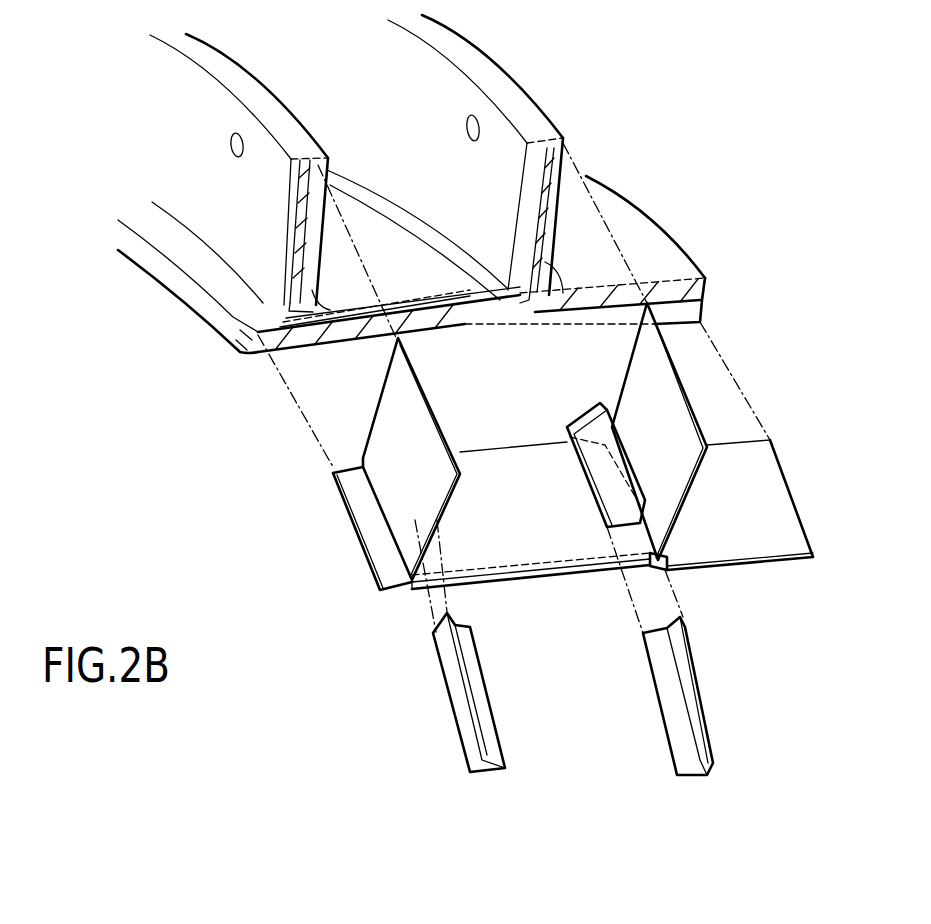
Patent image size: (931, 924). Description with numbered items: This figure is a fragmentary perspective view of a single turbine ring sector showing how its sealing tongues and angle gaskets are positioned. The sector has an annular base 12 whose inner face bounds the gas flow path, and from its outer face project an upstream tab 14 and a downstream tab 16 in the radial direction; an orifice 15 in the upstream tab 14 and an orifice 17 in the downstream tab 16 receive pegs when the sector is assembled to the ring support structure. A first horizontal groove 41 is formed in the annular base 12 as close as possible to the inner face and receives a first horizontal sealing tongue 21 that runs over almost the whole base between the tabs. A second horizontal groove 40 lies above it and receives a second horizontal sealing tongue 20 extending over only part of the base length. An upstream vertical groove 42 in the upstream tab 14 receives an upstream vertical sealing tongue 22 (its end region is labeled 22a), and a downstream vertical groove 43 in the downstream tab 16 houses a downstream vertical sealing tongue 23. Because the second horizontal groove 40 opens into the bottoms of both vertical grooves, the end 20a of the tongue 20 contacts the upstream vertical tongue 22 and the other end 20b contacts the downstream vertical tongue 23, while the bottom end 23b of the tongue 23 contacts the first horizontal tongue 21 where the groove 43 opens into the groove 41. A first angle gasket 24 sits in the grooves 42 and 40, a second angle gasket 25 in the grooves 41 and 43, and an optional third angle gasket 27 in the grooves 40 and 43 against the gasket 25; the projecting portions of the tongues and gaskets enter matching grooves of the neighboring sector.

The annular base 12 is at (470, 337).
The upstream tab 14 is at (322, 129).
The orifice 15 is at (230, 152).
The downstream tab 16 is at (548, 105).
The orifice 17 is at (467, 136).
The second horizontal sealing tongue 20 is at (516, 458).
The end of the second horizontal sealing tongue 20a is at (413, 585).
The other end of the second horizontal sealing tongue 20b is at (650, 578).
The first horizontal sealing tongue 21 is at (778, 505).
The upstream vertical sealing tongue 22 is at (395, 422).
The flange of first side plate 22a is at (383, 563).
The downstream vertical sealing tongue 23 is at (630, 390).
The bottom end of the downstream vertical sealing tongue 23b is at (667, 557).
The first angle gasket 24 is at (463, 718).
The second angle gasket 25 is at (697, 693).
The third angle gasket 27 is at (605, 486).
The second horizontal groove 40 is at (417, 306).
The first horizontal groove 41 is at (568, 315).
The upstream vertical groove 42 is at (297, 250).
The downstream vertical groove 43 is at (543, 247).